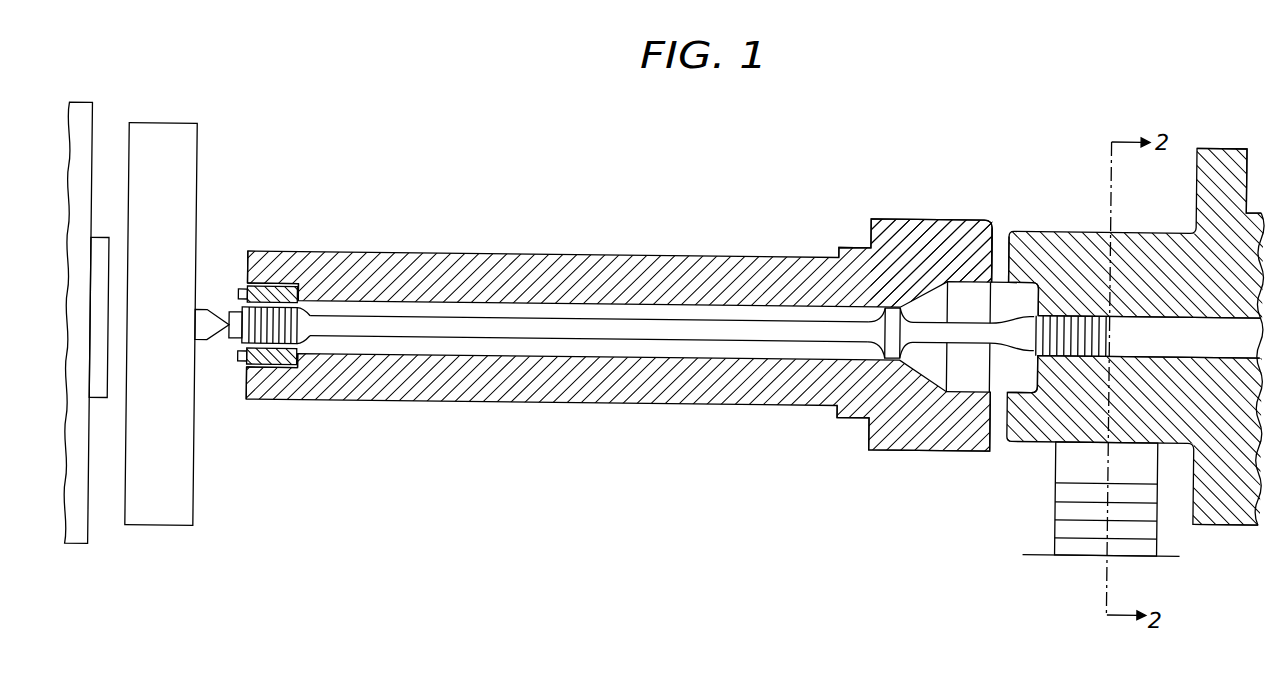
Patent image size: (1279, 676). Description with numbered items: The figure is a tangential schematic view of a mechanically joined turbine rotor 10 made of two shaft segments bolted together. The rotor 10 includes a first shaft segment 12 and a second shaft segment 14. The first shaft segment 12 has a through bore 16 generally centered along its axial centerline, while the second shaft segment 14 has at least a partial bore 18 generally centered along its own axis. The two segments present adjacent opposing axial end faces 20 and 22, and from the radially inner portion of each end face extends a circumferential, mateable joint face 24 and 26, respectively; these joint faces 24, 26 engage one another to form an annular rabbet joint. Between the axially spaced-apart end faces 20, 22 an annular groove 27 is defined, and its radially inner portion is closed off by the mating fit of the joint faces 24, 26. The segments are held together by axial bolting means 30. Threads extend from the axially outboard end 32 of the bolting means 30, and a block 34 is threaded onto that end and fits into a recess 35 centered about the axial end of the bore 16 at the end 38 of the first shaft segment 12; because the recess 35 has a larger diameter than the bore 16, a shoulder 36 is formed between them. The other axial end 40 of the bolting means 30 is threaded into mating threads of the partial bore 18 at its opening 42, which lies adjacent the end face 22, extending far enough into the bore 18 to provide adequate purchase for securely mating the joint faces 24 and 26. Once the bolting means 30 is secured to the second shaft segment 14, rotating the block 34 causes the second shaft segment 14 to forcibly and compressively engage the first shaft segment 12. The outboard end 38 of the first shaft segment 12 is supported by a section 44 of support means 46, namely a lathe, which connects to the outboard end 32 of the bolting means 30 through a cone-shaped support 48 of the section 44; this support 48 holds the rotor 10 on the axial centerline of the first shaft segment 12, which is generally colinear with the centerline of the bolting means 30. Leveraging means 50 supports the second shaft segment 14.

The turbine rotor 10 is at (893, 215).
The first shaft segment 12 is at (540, 256).
The second shaft segment 14 is at (1082, 228).
The through bore 16 is at (646, 303).
The partial bore 18 is at (1168, 316).
The axial end face 20 is at (993, 272).
The axial end face 22 is at (1012, 238).
The joint face 24 is at (960, 312).
The joint face 26 is at (993, 281).
The annular groove 27 is at (1000, 248).
The bolting means 30 is at (720, 319).
The axially outboard end 32 is at (230, 318).
The block 34 is at (278, 291).
The recess 35 is at (284, 290).
The shoulder 36 is at (314, 270).
The end of shaft segment 38 is at (247, 268).
The other axial end 40 is at (1109, 319).
The opening 42 is at (1032, 362).
The section of support means 44 is at (165, 129).
The support means 46 is at (90, 111).
The cone-shaped support 48 is at (213, 346).
The leveraging means 50 is at (1050, 474).